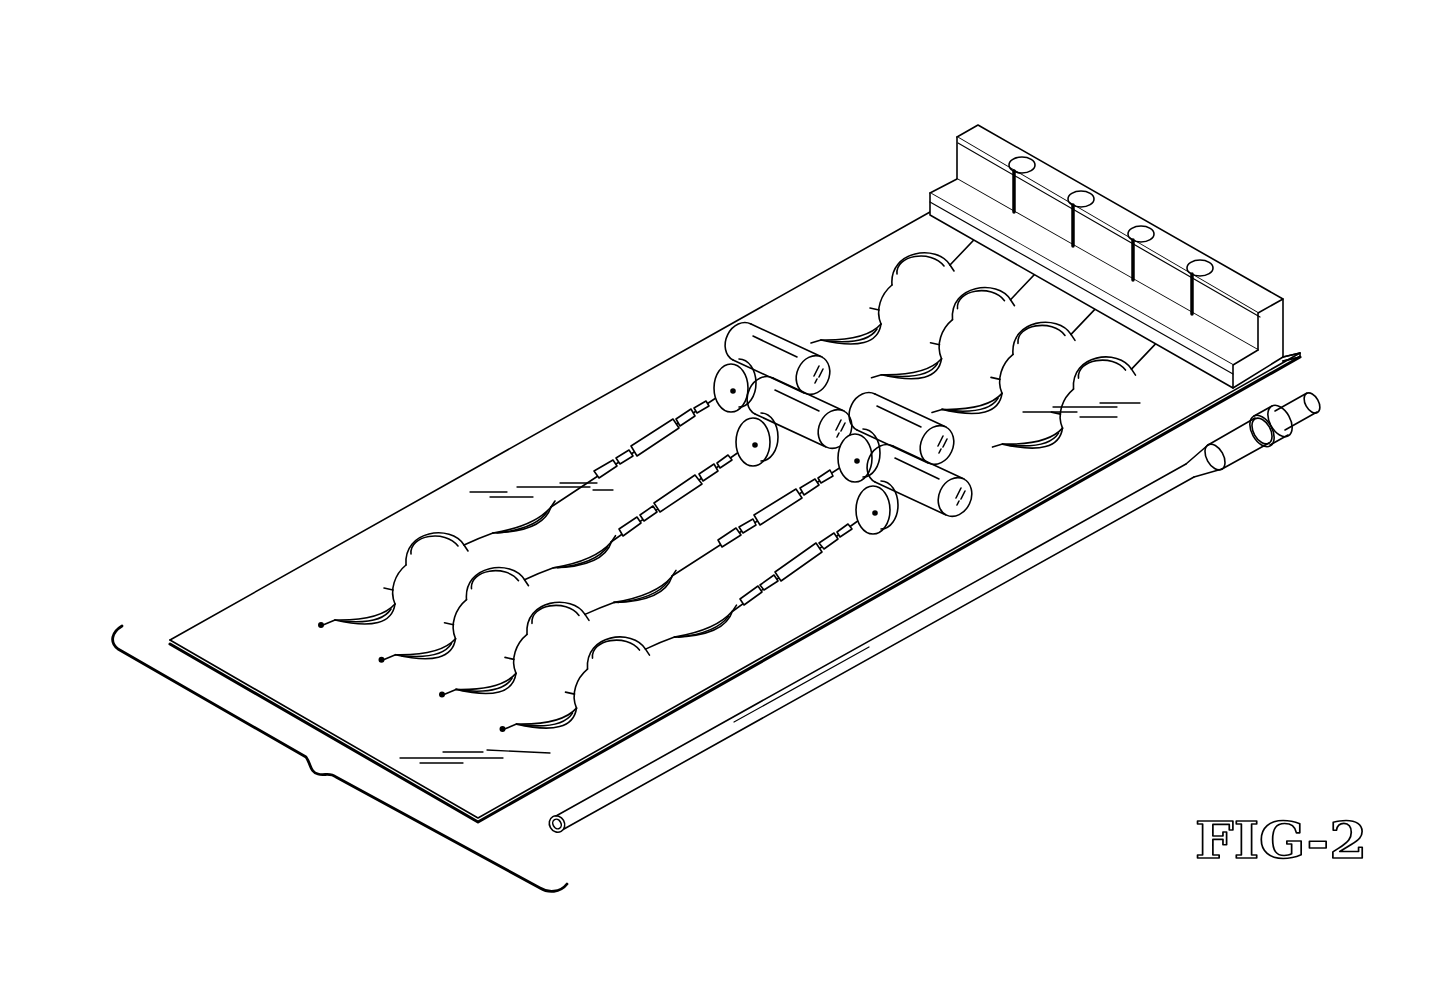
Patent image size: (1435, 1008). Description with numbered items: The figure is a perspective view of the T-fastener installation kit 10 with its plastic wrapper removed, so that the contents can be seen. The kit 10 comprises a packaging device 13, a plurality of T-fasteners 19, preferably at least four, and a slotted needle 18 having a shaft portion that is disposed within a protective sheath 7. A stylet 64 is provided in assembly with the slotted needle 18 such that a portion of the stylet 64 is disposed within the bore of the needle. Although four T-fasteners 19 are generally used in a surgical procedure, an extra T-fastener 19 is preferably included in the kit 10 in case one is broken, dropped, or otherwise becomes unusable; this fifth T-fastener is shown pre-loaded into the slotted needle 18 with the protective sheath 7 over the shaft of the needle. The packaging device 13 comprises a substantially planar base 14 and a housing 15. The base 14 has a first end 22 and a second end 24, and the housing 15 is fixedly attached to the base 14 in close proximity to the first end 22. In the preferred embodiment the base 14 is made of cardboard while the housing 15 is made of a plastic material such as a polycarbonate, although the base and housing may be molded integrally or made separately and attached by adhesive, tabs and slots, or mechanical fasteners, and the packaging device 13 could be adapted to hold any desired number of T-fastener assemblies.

The T-fastener installation kit 10 is at (616, 229).
The packaging device 13 is at (296, 577).
The base 14 is at (525, 462).
The housing 15 is at (992, 137).
The T-fasteners 19 is at (656, 430).
The first end 22 is at (1300, 345).
The second end 24 is at (212, 647).
The protective sheath 7 is at (890, 632).
The slotted needle 18 is at (1240, 439).
The stylet 64 is at (1307, 419).